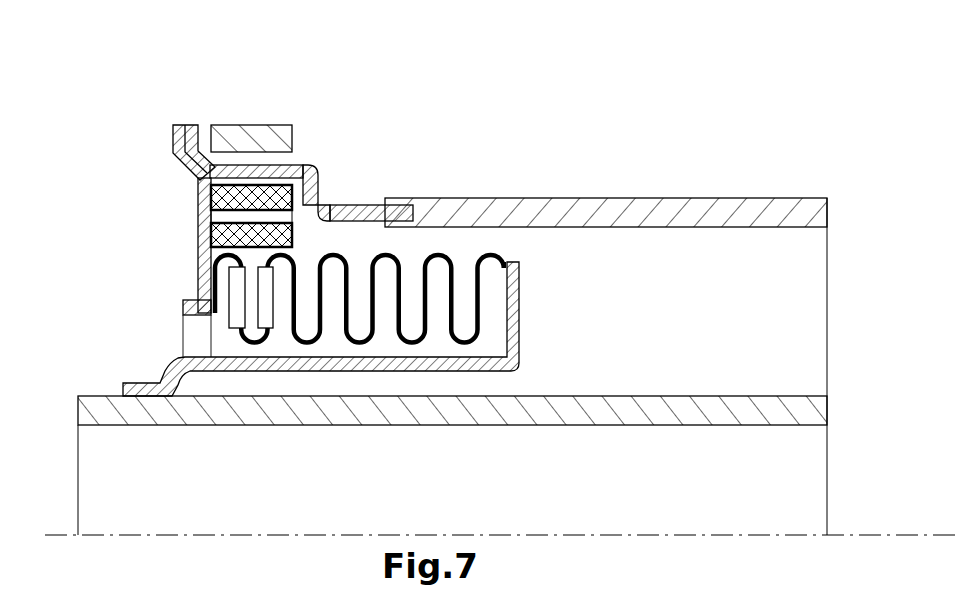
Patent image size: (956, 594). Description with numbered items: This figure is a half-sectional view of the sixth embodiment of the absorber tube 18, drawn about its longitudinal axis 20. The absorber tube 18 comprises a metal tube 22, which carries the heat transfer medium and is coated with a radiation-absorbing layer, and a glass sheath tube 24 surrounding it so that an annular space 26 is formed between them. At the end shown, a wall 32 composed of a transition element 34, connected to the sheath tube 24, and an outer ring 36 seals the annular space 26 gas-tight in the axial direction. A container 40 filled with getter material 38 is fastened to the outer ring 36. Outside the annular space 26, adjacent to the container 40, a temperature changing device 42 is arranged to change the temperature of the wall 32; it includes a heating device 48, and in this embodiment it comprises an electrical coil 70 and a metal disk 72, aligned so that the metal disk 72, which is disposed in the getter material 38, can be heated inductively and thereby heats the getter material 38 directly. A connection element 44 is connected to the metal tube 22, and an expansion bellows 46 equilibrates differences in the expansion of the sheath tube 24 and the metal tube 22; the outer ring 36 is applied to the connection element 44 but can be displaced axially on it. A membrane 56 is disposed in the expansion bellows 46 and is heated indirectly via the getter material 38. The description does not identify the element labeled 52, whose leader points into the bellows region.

The absorber tube 18 is at (675, 137).
The longitudinal axis 20 is at (118, 535).
The metal tube 22 is at (658, 396).
The sheath tube 24 is at (477, 220).
The annular space 26 is at (716, 304).
The wall 32 is at (132, 127).
The transition element 34 is at (312, 165).
The outer ring 36 is at (183, 308).
The getter material 38 is at (293, 202).
The container 40 is at (293, 167).
The temperature changing device 42 is at (202, 83).
The connection element 44 is at (514, 343).
The expansion bellows 46 is at (425, 243).
The heating device 48 is at (196, 149).
The bellows 52 is at (330, 288).
The membrane 56 is at (238, 312).
The electrical coil 70 is at (238, 128).
The metal disk 72 is at (222, 217).